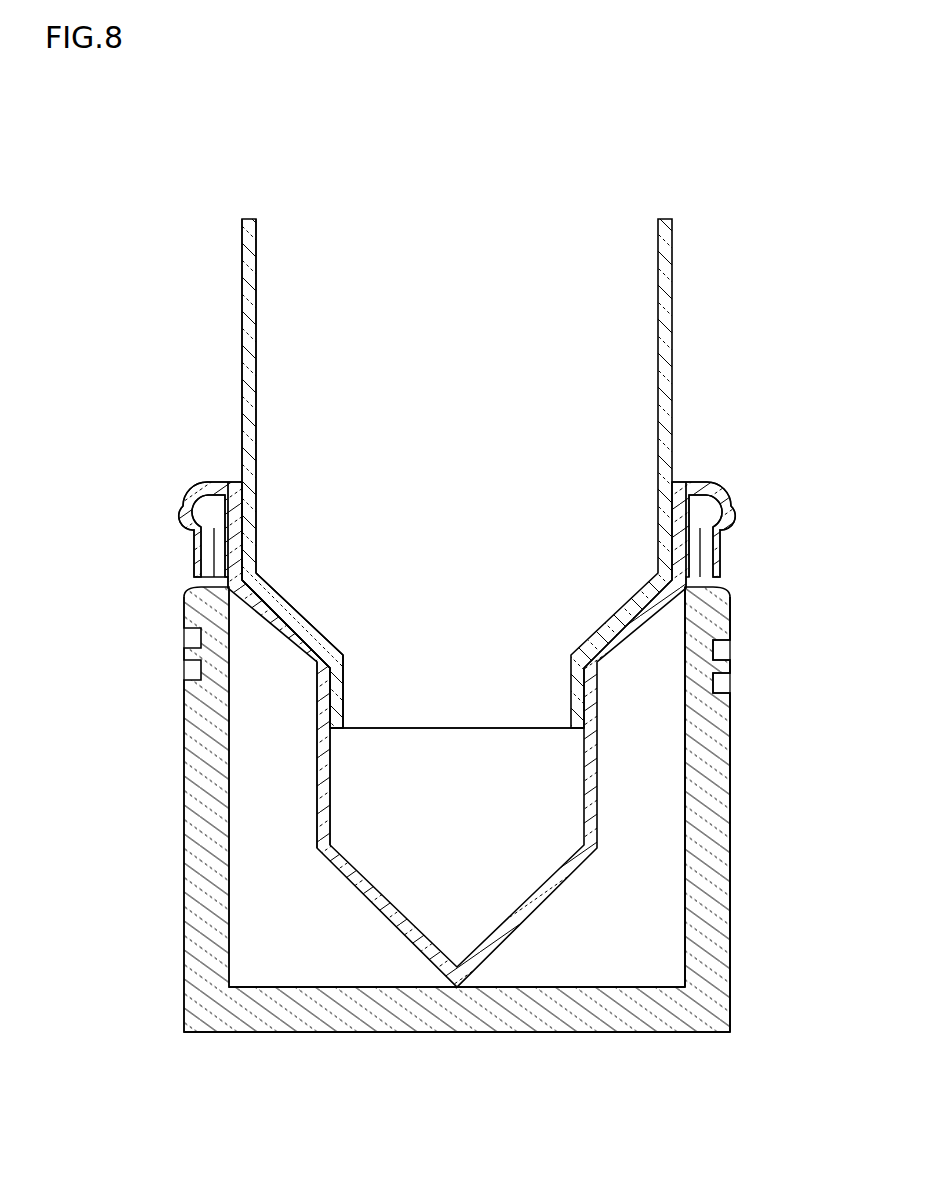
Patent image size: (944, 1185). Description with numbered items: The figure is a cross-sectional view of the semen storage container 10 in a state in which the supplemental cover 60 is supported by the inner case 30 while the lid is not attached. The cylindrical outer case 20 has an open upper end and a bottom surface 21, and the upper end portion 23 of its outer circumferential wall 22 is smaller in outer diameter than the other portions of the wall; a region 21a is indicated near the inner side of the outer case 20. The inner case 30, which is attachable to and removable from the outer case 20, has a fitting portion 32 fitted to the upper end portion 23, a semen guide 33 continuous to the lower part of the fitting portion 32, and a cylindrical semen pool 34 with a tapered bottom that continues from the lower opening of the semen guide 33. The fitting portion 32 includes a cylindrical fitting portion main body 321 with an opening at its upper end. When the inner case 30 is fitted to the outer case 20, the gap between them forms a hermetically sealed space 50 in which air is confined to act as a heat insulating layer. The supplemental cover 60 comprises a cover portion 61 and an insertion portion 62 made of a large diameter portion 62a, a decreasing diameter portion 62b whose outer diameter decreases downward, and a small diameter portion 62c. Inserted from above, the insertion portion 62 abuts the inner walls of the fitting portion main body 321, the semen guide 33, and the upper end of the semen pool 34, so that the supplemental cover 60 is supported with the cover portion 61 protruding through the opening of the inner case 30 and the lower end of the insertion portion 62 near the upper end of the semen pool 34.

The semen storage container 10 is at (773, 460).
The outer case 20 is at (731, 865).
The bottom surface 21 is at (622, 983).
The inner wall surface 21a is at (680, 478).
The outer circumferential wall 22 is at (731, 806).
The upper end portion 23 is at (695, 542).
The inner case 30 is at (510, 935).
The fitting portion 32 is at (193, 525).
The fitting portion main body 321 is at (230, 605).
The semen guide 33 is at (266, 620).
The semen pool 34 is at (320, 778).
The hermetically sealed space 50 is at (635, 905).
The supplemental cover 60 is at (672, 300).
The cover portion 61 is at (242, 300).
The insertion portion 62 is at (108, 663).
The large diameter portion 62a is at (282, 602).
The decreasing diameter portion 62b is at (350, 695).
The small diameter portion 62c is at (352, 725).